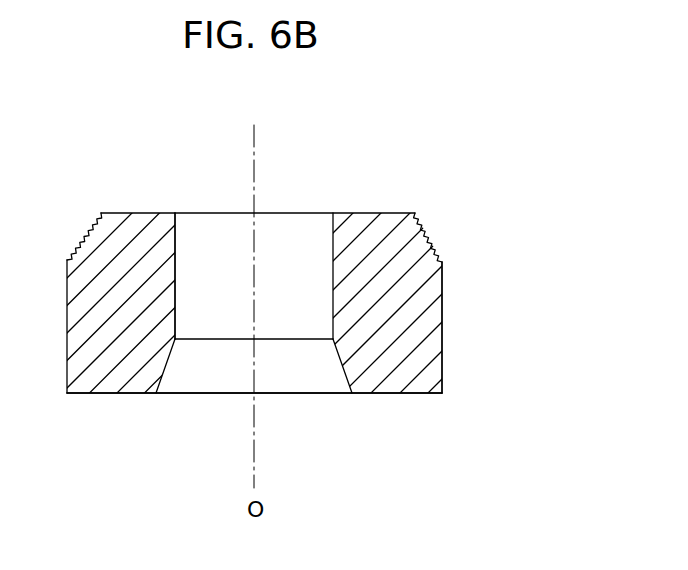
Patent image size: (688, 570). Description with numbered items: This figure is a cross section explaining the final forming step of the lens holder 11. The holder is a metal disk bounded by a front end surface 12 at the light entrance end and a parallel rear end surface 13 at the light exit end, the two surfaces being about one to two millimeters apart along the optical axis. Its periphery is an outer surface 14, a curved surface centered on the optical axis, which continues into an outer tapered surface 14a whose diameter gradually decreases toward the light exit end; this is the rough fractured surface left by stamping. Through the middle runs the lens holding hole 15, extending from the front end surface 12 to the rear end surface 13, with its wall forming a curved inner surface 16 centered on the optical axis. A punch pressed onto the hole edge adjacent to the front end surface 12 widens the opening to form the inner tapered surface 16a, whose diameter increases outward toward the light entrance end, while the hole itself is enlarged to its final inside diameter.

The lens holder 11 is at (375, 178).
The front end surface 12 is at (98, 393).
The rear end surface 13 is at (122, 213).
The outer surface 14 is at (443, 318).
The outer tapered surface 14a is at (428, 228).
The lens holding hole 15 is at (298, 243).
The inner surface 16 is at (175, 278).
The inner tapered surface 16a is at (168, 355).